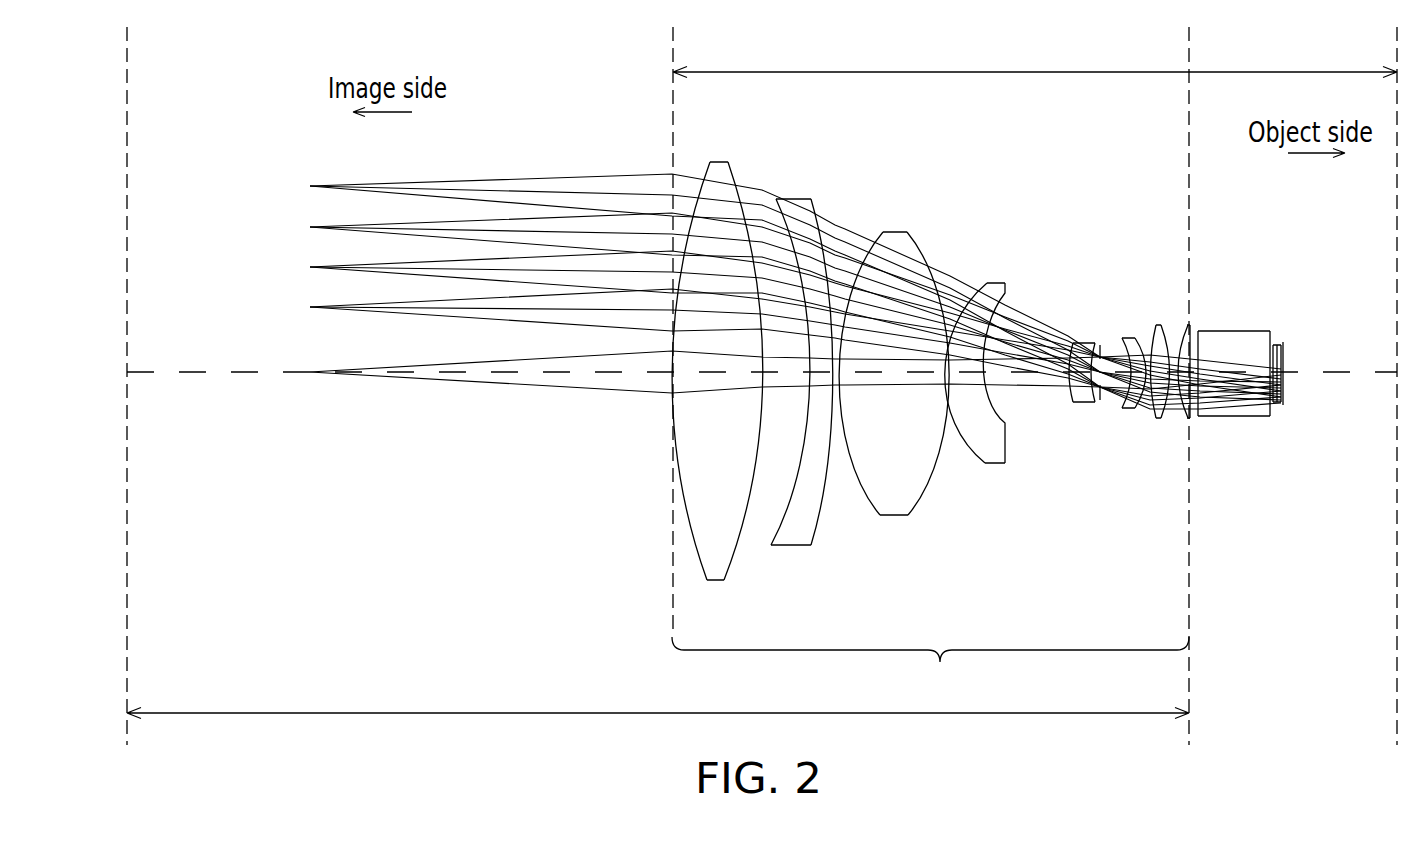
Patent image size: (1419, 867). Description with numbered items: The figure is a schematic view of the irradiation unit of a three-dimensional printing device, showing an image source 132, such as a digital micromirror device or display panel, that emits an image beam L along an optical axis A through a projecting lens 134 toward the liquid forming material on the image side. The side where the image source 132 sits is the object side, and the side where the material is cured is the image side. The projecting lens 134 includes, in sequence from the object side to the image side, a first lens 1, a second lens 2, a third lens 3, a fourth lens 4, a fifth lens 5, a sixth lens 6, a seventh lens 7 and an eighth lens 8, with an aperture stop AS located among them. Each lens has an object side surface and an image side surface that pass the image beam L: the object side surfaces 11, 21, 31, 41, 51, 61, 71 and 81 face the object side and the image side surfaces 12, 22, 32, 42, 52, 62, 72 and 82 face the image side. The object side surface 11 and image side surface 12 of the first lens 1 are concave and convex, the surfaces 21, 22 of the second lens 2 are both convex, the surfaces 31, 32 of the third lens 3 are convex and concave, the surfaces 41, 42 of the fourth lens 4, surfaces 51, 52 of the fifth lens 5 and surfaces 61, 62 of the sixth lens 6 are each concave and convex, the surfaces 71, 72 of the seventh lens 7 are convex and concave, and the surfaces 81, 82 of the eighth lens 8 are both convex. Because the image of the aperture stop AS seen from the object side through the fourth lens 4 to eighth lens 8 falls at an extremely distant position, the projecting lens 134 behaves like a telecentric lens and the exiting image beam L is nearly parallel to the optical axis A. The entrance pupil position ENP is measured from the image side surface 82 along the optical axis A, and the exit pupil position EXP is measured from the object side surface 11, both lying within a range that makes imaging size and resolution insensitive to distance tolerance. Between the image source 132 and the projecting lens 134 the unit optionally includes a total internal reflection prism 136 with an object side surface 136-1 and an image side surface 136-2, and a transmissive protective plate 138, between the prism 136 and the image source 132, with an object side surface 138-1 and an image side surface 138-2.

The first lens 1 is at (1190, 325).
The object side surface of first lens 11 is at (1199, 423).
The image side surface of first lens 12 is at (1187, 420).
The second lens 2 is at (1159, 325).
The object side surface of second lens 21 is at (1172, 423).
The image side surface of second lens 22 is at (1153, 423).
The third lens 3 is at (1128, 338).
The object side surface of third lens 31 is at (1147, 414).
The image side surface of third lens 32 is at (1122, 408).
The fourth lens 4 is at (1085, 345).
The object side surface of fourth lens 41 is at (1093, 407).
The image side surface of fourth lens 42 is at (1065, 401).
The fifth lens 5 is at (998, 283).
The object side surface of fifth lens 51 is at (1010, 440).
The image side surface of fifth lens 52 is at (955, 436).
The sixth lens 6 is at (896, 232).
The object side surface of sixth lens 61 is at (913, 470).
The image side surface of sixth lens 62 is at (865, 495).
The seventh lens 7 is at (793, 199).
The object side surface of seventh lens 71 is at (827, 498).
The image side surface of seventh lens 72 is at (786, 493).
The eighth lens 8 is at (718, 162).
The object side surface of eighth lens 81 is at (748, 525).
The image side surface of eighth lens 82 is at (686, 514).
The aperture stop AS is at (1100, 358).
The optical axis A is at (1345, 372).
The image beam L is at (1249, 423).
The image source 132 is at (1287, 353).
The projecting lens 134 is at (930, 667).
The total internal reflection prism 136 is at (1238, 331).
The object side surface of TIR prism 136-1 is at (1268, 337).
The image side surface of TIR prism 136-2 is at (1193, 337).
The transmissive protective plate 138 is at (1280, 339).
The object side surface of protective plate 138-1 is at (1288, 399).
The image side surface of protective plate 138-2 is at (1272, 409).
The entrance pupil position ENP is at (1035, 54).
The exit pupil position EXP is at (658, 734).